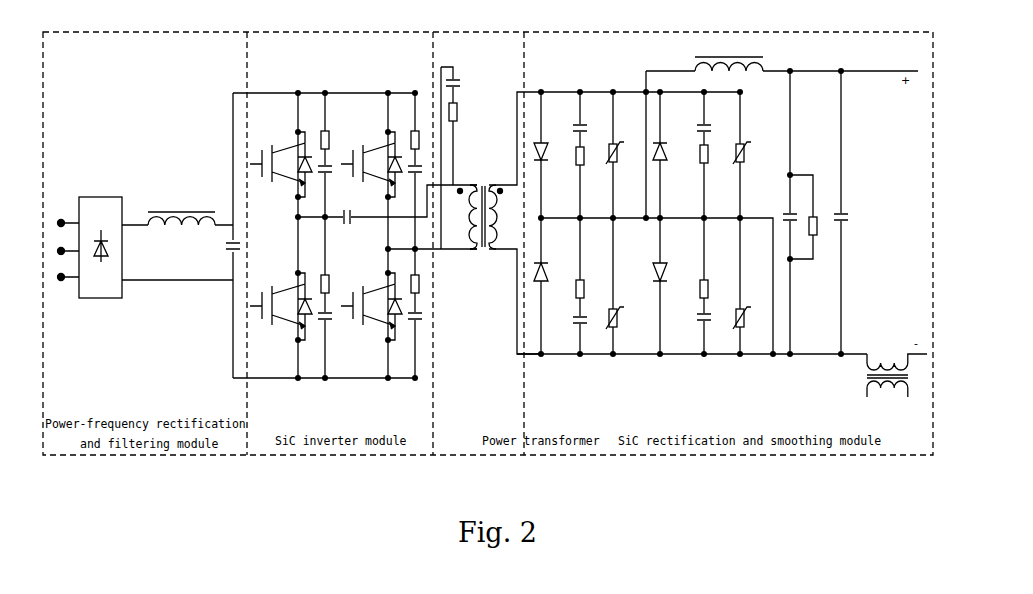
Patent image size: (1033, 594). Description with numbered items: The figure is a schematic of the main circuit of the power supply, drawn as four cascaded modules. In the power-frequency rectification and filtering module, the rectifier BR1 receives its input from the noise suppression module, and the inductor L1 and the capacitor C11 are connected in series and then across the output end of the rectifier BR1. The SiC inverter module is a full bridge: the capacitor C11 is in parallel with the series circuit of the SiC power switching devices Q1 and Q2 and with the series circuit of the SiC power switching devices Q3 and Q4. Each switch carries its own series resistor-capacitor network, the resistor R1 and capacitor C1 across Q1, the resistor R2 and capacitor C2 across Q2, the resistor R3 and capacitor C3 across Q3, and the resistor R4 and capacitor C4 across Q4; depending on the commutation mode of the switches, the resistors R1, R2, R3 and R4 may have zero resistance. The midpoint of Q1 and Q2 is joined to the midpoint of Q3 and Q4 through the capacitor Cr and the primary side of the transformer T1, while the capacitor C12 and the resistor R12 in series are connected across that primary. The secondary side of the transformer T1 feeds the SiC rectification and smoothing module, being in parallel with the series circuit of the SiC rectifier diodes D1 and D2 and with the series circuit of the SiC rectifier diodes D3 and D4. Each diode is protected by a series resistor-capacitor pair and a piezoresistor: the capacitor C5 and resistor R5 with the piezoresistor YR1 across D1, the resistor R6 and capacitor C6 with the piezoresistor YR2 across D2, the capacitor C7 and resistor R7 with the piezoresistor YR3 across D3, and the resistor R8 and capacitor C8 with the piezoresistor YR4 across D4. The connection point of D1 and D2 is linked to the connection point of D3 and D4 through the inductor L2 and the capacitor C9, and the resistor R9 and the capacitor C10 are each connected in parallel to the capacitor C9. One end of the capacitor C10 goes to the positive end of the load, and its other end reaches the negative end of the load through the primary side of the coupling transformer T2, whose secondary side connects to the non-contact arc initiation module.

The rectifier BR1 is at (90, 239).
The inductor L1 is at (181, 210).
The capacitor C11 is at (242, 250).
The SiC power switching device Q1 is at (281, 164).
The SiC power switching device Q2 is at (281, 314).
The SiC power switching device Q3 is at (371, 164).
The SiC power switching device Q4 is at (371, 314).
The resistor R1 is at (334, 140).
The resistor R2 is at (335, 285).
The resistor R3 is at (407, 130).
The resistor R4 is at (428, 284).
The capacitor C1 is at (330, 178).
The capacitor C2 is at (333, 324).
The capacitor C3 is at (410, 185).
The capacitor C4 is at (426, 319).
The capacitor Cr is at (353, 208).
The capacitor C12 is at (465, 84).
The resistor R12 is at (467, 112).
The transformer T1 is at (500, 223).
The SiC rectifier diode D1 is at (549, 143).
The SiC rectifier diode D2 is at (549, 282).
The SiC rectifier diode D3 is at (668, 143).
The SiC rectifier diode D4 is at (669, 282).
The capacitor C5 is at (585, 120).
The capacitor C6 is at (586, 331).
The capacitor C7 is at (709, 120).
The capacitor C8 is at (712, 330).
The resistor R5 is at (588, 168).
The resistor R6 is at (589, 284).
The resistor R7 is at (712, 166).
The resistor R8 is at (713, 282).
The piezoresistor YR1 is at (623, 165).
The piezoresistor YR2 is at (626, 327).
The piezoresistor YR3 is at (753, 164).
The piezoresistor YR4 is at (749, 327).
The inductor L2 is at (728, 56).
The capacitor C9 is at (780, 209).
The resistor R9 is at (821, 234).
The capacitor C10 is at (850, 209).
The coupling transformer T2 is at (897, 375).